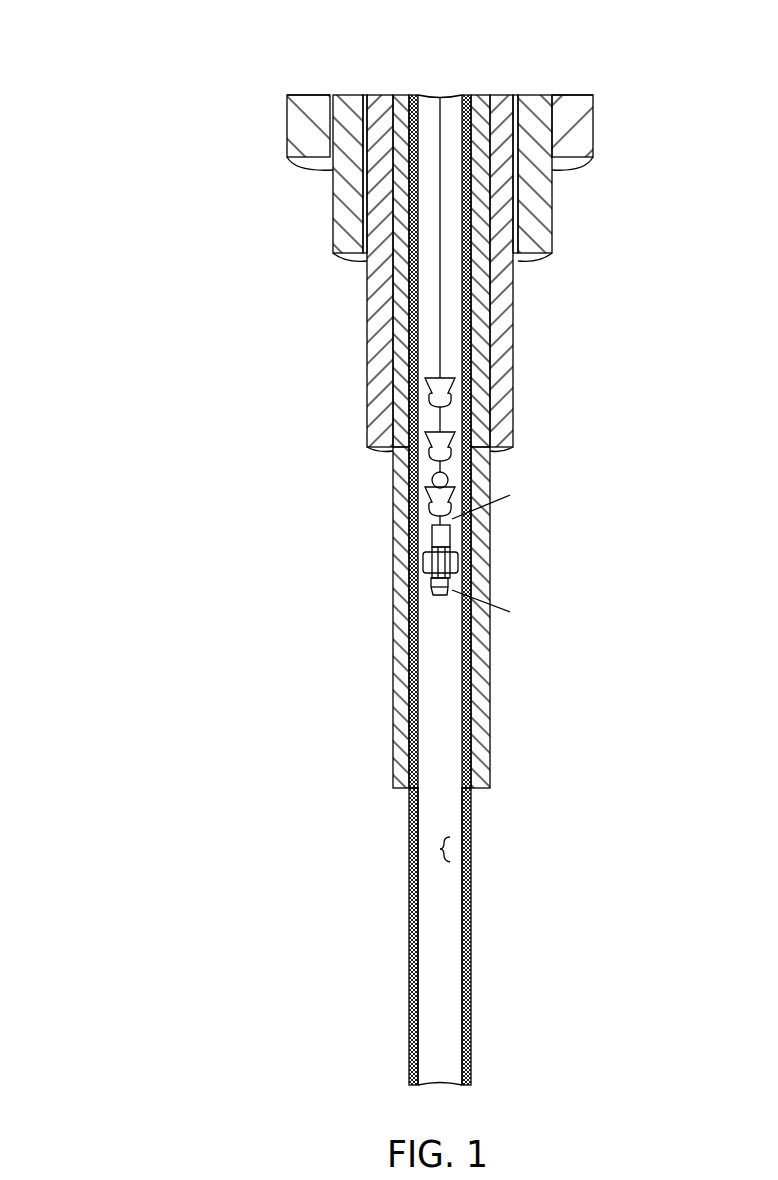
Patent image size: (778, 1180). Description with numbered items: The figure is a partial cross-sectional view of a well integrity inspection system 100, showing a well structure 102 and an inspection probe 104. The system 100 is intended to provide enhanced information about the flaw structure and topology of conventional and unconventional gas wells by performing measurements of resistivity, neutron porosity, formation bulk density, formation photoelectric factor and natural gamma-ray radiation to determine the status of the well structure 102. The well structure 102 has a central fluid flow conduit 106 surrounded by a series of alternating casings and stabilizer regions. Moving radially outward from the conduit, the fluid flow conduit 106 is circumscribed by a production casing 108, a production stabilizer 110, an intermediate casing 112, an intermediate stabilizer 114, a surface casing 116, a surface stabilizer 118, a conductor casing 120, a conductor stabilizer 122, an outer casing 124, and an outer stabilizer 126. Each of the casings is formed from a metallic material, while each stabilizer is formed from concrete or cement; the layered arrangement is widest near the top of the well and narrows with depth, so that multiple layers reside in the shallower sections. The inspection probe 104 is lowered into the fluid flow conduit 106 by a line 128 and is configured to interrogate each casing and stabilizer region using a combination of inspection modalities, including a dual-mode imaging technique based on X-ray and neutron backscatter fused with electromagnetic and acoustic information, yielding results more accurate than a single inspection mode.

The well integrity inspection system 100 is at (183, 69).
The well structure 102 is at (272, 192).
The inspection probe 104 is at (423, 558).
The fluid flow conduit 106 is at (450, 849).
The production casing 108 is at (447, 897).
The production stabilizer 110 is at (472, 968).
The intermediate casing 112 is at (473, 753).
The intermediate stabilizer 114 is at (480, 695).
The surface casing 116 is at (483, 356).
The surface stabilizer 118 is at (503, 300).
The conductor casing 120 is at (515, 227).
The conductor stabilizer 122 is at (533, 182).
The outer casing 124 is at (587, 133).
The outer stabilizer 126 is at (582, 103).
The line 128 is at (440, 285).